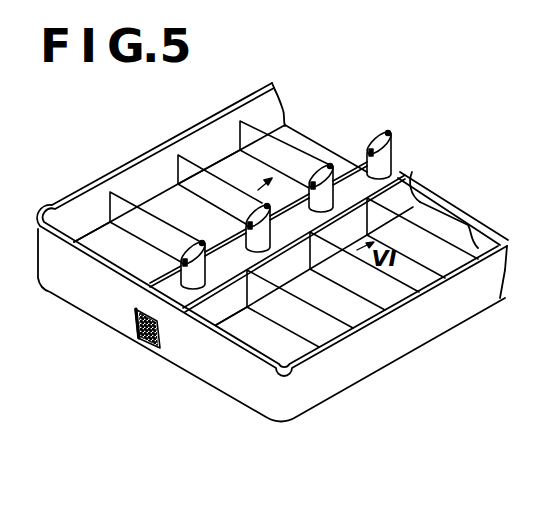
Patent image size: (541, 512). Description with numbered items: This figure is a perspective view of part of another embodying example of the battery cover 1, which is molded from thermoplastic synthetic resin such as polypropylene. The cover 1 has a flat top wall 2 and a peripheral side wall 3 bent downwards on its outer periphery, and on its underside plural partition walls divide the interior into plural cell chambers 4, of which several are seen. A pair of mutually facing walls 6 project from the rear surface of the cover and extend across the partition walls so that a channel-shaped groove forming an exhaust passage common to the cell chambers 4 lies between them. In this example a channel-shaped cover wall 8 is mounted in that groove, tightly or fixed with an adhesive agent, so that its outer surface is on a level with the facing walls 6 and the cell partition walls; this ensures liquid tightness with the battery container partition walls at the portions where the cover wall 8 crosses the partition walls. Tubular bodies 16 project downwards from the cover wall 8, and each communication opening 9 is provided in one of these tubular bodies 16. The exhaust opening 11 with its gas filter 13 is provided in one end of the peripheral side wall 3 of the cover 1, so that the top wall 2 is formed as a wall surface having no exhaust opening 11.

The battery cover 1 is at (69, 309).
The top wall 2 is at (95, 242).
The peripheral side wall 3 is at (109, 168).
The cell chamber 4 is at (223, 166).
The facing wall 6 is at (219, 310).
The cover wall 8 is at (400, 170).
The communication opening 9 is at (389, 130).
The exhaust opening 11 is at (145, 349).
The gas filter 13 is at (134, 343).
The tubular body 16 is at (371, 137).